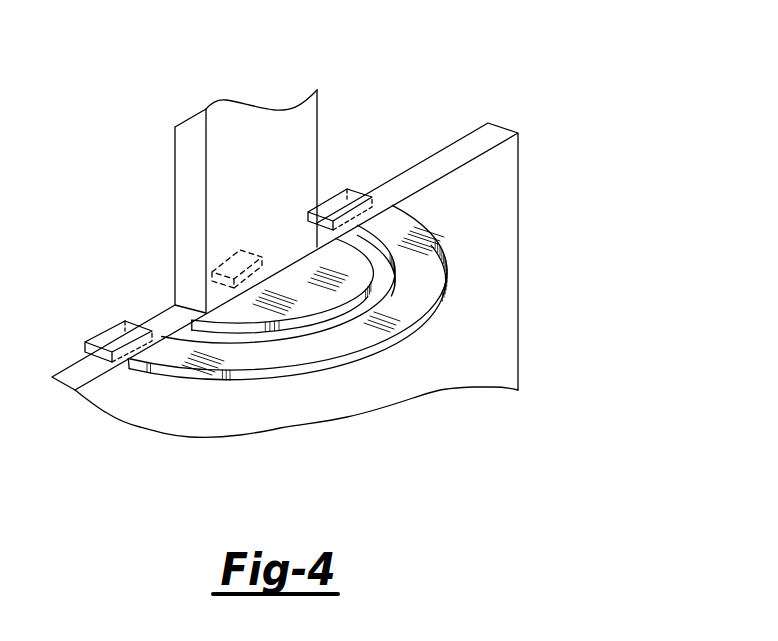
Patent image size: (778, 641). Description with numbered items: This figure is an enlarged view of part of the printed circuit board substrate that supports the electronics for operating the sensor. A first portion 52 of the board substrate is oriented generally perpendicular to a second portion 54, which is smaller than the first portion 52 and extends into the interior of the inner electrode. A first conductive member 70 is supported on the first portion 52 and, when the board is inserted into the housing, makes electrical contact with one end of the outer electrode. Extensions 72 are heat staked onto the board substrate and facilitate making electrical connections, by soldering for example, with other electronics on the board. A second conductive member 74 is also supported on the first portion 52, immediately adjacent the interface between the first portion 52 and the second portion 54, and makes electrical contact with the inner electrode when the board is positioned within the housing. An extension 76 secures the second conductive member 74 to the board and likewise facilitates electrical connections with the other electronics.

The first portion 52 is at (477, 222).
The second portion 54 is at (302, 127).
The first conductive member 70 is at (403, 307).
The extensions 72 is at (120, 330).
The second conductive member 74 is at (296, 293).
The extension 76 is at (233, 262).